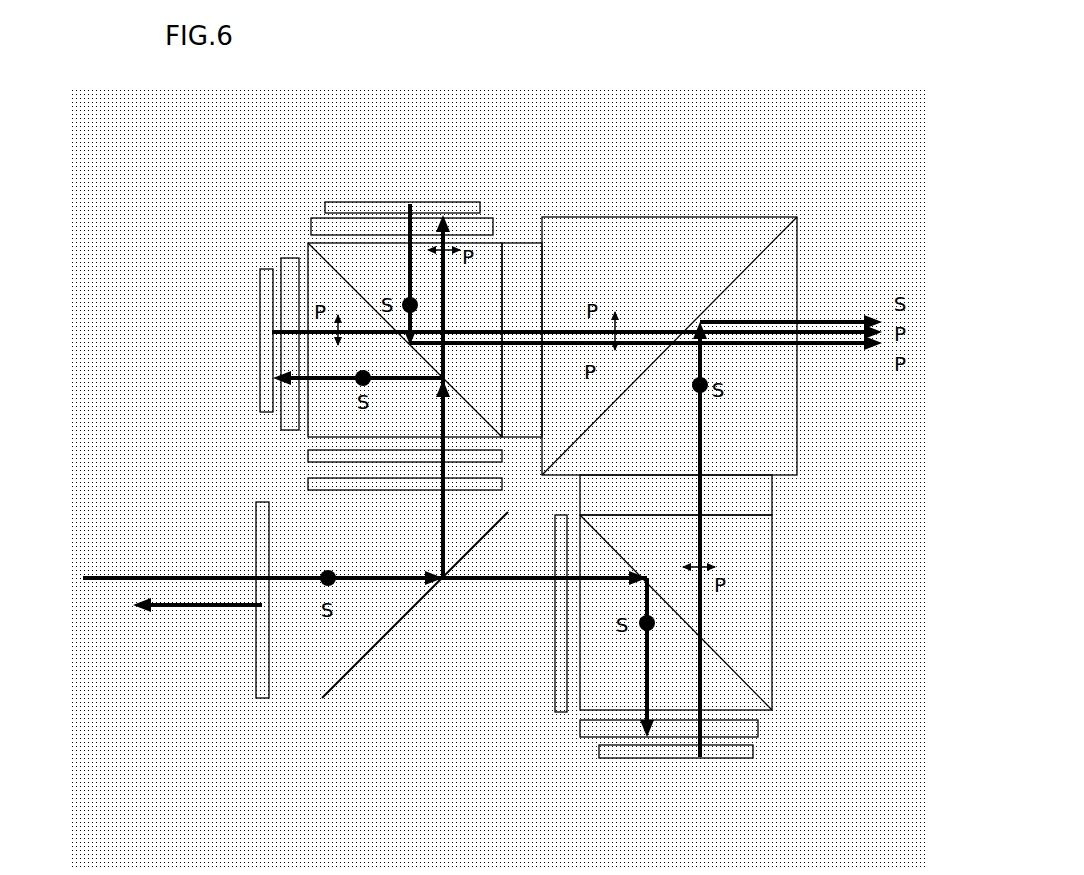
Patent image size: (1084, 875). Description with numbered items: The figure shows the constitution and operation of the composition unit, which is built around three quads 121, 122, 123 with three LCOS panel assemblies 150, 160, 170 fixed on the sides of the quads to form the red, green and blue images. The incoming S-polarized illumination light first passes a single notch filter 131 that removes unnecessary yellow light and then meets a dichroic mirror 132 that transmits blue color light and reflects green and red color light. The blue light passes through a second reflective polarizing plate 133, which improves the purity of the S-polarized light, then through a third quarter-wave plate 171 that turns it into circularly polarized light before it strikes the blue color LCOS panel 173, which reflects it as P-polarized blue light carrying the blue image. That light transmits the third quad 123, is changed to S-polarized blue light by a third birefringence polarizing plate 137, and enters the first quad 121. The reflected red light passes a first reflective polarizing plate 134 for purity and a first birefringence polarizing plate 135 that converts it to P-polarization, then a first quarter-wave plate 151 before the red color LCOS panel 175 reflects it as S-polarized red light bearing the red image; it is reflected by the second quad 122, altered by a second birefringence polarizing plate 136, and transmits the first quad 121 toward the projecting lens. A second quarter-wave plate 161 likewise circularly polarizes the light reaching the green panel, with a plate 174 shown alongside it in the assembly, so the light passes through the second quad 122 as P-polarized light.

The first quad 121 is at (740, 228).
The second quad 122 is at (487, 270).
The third quad 123 is at (755, 612).
The notch filter 131 is at (258, 660).
The dichroic mirror 132 is at (393, 625).
The second reflective polarizing plate 133 is at (555, 663).
The first reflective polarizing plate 134 is at (358, 491).
The first birefringence polarizing plate 135 is at (308, 458).
The second birefringence polarizing plate 136 is at (524, 262).
The third birefringence polarizing plate 137 is at (762, 495).
The LCOS panel assembly 150 is at (362, 176).
The first quarter-wave plate 151 is at (312, 226).
The red color LCOS panel 175 is at (400, 203).
The LCOS panel assembly 160 is at (224, 359).
The second quarter-wave plate 161 is at (290, 265).
The second reflective display panel 174 is at (265, 312).
The LCOS panel assembly 170 is at (712, 785).
The third quarter-wave plate 171 is at (752, 727).
The blue color LCOS panel 173 is at (626, 760).